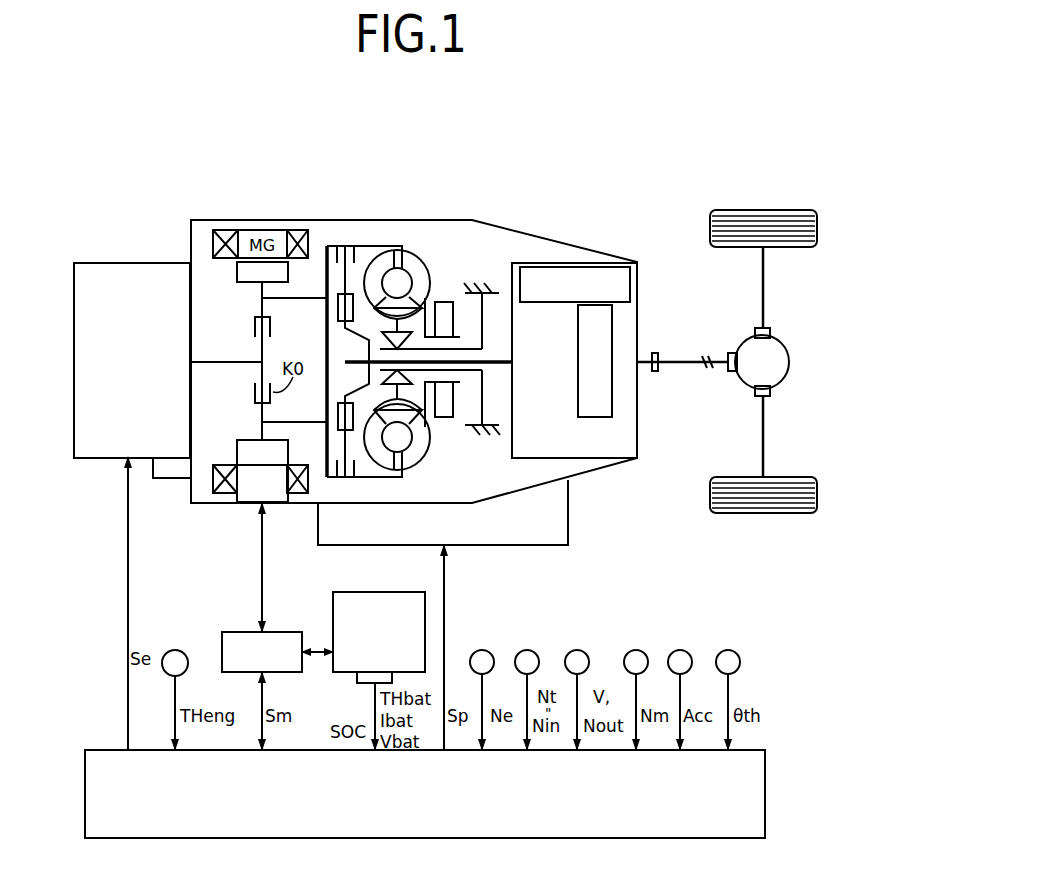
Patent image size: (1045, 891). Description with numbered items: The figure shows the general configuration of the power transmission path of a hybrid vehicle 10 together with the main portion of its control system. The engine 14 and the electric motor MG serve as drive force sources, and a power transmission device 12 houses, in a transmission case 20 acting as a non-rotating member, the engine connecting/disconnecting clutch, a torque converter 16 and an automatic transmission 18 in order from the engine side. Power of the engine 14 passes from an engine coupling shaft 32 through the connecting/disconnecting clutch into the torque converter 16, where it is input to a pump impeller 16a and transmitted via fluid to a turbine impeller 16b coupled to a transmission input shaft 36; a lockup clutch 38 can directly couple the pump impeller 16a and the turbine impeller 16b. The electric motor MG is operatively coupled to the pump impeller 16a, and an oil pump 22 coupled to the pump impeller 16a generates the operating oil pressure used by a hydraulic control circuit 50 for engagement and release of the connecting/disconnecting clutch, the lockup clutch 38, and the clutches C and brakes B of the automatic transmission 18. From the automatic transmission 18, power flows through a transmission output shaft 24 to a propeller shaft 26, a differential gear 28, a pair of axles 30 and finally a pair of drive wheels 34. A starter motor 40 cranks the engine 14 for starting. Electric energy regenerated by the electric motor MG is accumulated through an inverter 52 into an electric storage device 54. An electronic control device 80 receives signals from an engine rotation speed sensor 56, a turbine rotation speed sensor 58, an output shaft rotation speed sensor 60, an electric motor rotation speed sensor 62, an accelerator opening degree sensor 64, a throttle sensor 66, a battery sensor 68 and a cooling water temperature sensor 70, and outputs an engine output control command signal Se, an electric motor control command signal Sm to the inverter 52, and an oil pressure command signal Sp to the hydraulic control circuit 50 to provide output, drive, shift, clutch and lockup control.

The vehicle 10 is at (583, 125).
The power transmission device 12 is at (404, 173).
The engine 14 is at (98, 268).
The torque converter 16 is at (407, 365).
The pump impeller 16a is at (413, 448).
The turbine impeller 16b is at (368, 448).
The automatic transmission 18 is at (638, 309).
The transmission case 20 is at (424, 219).
The oil pump 22 is at (441, 418).
The transmission output shaft 24 is at (645, 355).
The propeller shaft 26 is at (683, 366).
The differential gear 28 is at (775, 349).
The axles 30 is at (762, 288).
The engine coupling shaft 32 is at (224, 360).
The drive wheels 34 is at (713, 228).
The transmission input shaft 36 is at (495, 363).
The lockup clutch 38 is at (359, 262).
The starter motor 40 is at (170, 478).
The hydraulic control circuit 50 is at (572, 520).
The inverter 52 is at (272, 632).
The electric storage device 54 is at (382, 592).
The engine rotation speed sensor 56 is at (487, 651).
The turbine rotation speed sensor 58 is at (532, 651).
The output shaft rotation speed sensor 60 is at (582, 651).
The electric motor rotation speed sensor 62 is at (641, 651).
The accelerator opening degree sensor 64 is at (685, 651).
The throttle sensor 66 is at (733, 651).
The battery sensor 68 is at (357, 678).
The cooling water temperature sensor 70 is at (178, 650).
The electronic control device 80 is at (750, 762).